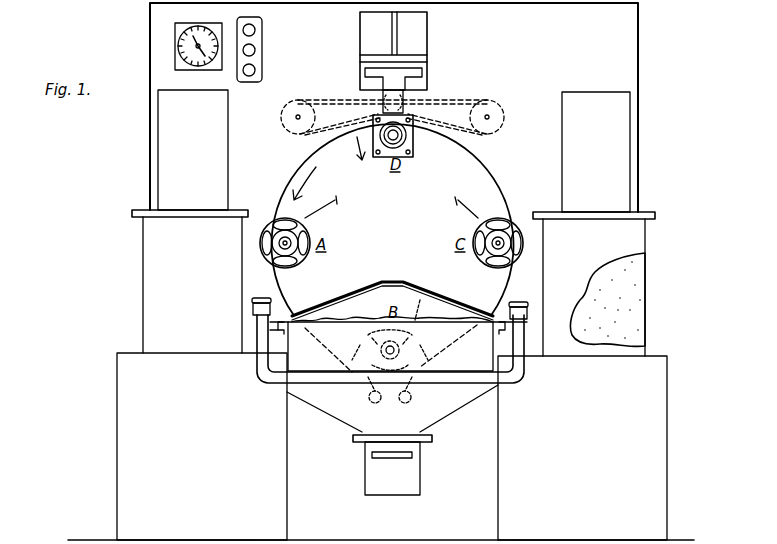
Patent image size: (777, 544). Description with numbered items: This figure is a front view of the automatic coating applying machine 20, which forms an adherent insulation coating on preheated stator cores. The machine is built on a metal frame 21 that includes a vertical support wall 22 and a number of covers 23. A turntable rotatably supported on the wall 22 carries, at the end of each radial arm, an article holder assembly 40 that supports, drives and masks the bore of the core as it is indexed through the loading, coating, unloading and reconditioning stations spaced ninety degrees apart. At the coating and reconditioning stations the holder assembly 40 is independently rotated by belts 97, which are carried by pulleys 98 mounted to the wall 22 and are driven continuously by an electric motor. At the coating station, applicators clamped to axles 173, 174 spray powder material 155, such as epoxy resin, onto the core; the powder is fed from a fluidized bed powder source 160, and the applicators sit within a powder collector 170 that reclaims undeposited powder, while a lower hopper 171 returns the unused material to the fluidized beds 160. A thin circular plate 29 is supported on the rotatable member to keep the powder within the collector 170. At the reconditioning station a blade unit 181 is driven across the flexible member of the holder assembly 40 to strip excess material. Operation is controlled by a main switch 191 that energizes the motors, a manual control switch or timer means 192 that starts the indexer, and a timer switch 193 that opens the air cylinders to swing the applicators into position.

The automatic coating applying machine 20 is at (600, 446).
The metal frame 21 is at (640, 202).
The vertical support wall 22 is at (628, 65).
The covers 23 is at (126, 418).
The thin circular plate 29 is at (500, 182).
The article holder assembly 40 is at (413, 143).
The belts 97 is at (443, 100).
The pulleys 98 is at (497, 100).
The powder material 155 is at (623, 310).
The fluidized bed powder source 160 is at (172, 155).
The powder collector 170 is at (460, 415).
The lower hopper 171 is at (420, 478).
The axle 173 is at (368, 397).
The axle 174 is at (413, 397).
The blade unit 181 is at (410, 108).
The main switch 191 is at (262, 47).
The manual control switch or timer means 192 is at (258, 298).
The timer switch 193 is at (172, 46).